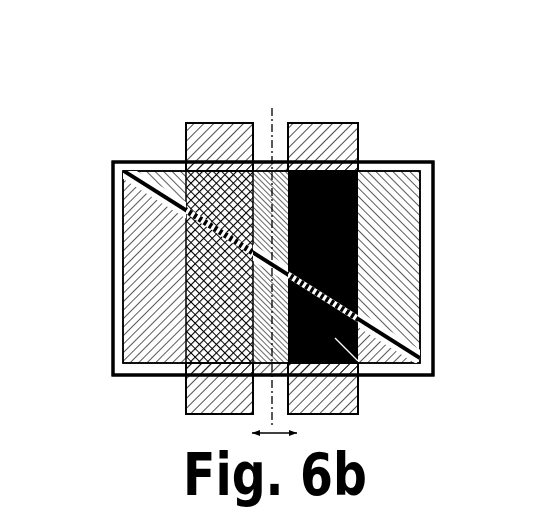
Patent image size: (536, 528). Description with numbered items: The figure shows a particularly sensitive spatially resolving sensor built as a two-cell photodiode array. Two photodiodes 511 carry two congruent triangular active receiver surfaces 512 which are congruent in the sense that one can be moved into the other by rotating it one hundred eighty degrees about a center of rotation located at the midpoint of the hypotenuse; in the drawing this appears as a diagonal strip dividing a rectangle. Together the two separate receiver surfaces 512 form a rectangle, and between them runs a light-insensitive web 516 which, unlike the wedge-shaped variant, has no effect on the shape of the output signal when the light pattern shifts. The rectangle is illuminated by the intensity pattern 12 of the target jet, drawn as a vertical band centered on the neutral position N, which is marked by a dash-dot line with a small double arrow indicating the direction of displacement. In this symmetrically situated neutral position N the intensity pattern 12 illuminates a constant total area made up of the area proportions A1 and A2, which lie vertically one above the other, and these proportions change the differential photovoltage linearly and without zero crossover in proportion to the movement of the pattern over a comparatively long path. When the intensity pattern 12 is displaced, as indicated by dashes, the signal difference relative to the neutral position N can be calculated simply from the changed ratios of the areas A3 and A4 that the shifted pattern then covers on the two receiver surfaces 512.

The photodiode 511 is at (160, 375).
The active receiver surface 512 is at (157, 178).
The light-insensitive web 516 is at (142, 218).
The intensity pattern 12 is at (318, 150).
The neutral position N is at (270, 142).
The area proportion A1 is at (358, 361).
The area proportion A2 is at (323, 215).
The area A3 is at (184, 300).
The area A4 is at (183, 168).